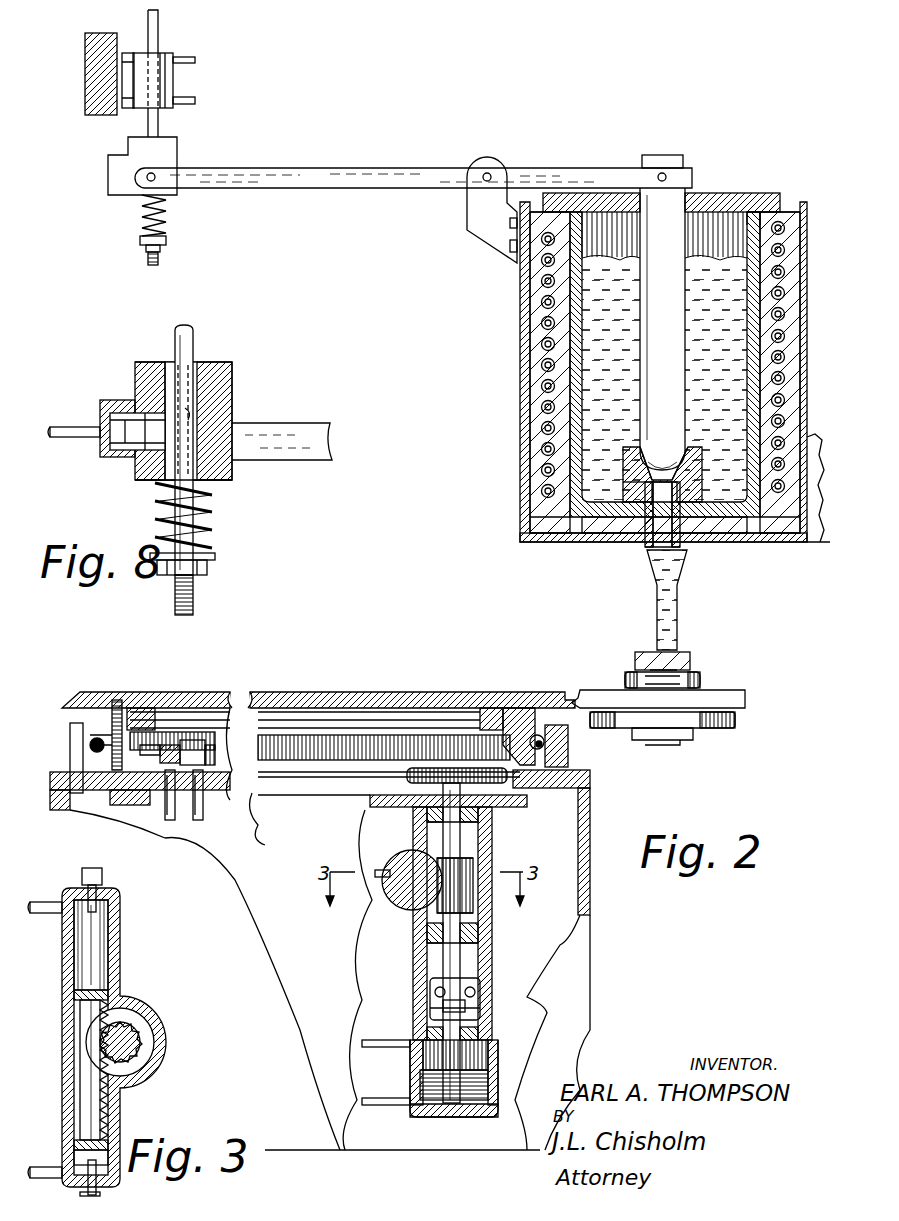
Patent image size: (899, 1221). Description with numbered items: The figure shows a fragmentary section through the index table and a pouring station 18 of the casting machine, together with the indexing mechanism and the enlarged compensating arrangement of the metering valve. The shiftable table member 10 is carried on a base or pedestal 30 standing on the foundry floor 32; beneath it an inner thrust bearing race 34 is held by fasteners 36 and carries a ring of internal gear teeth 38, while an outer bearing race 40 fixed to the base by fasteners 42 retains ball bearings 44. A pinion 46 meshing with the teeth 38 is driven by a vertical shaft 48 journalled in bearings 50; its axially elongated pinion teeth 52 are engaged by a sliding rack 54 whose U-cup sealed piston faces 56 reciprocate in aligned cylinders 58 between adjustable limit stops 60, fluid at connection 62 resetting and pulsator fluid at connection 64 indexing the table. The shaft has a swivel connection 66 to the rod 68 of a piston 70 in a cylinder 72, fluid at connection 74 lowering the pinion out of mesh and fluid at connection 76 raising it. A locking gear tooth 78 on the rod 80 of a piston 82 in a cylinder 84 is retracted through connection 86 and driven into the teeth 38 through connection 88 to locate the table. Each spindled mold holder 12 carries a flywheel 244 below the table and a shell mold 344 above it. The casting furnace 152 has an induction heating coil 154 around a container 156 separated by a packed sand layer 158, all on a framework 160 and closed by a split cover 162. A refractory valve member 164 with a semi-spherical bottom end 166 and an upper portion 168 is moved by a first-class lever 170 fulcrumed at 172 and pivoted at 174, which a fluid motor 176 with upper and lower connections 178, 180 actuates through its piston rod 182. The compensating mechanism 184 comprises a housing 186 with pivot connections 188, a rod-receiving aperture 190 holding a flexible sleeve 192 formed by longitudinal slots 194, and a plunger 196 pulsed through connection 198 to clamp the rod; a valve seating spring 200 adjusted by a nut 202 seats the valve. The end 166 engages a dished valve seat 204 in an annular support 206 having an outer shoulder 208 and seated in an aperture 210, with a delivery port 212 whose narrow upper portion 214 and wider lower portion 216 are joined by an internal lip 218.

In FIG. 2, the shiftable table member 10 is at (748, 699).
In FIG. 2, the spindled mold holder 12 is at (702, 677).
In FIG. 2, the station 18 is at (780, 613).
In FIG. 2, the base or pedestal 30 is at (590, 948).
In FIG. 2, the foundry floor 32 is at (298, 1150).
In FIG. 2, the inner thrust bearing race 34 is at (540, 772).
In FIG. 2, the fasteners 36 is at (118, 725).
In FIG. 2, the ring of internal gear teeth 38 is at (452, 745).
In FIG. 2, the outer bearing race 40 is at (560, 742).
In FIG. 2, the fasteners 42 is at (75, 748).
In FIG. 2, the ball bearings 44 is at (536, 734).
In FIG. 2, the pinion 46 is at (500, 780).
In FIG. 2, the vertical shaft 48 is at (455, 840).
In FIG. 3, the vertical shaft 48 is at (127, 1040).
In FIG. 2, the bearings 50 is at (478, 815).
In FIG. 2, the pinion teeth 52 is at (415, 893).
In FIG. 3, the pinion teeth 52 is at (140, 1050).
In FIG. 2, the sliding rack 54 is at (437, 878).
In FIG. 3, the sliding rack 54 is at (90, 1056).
In FIG. 3, the U-cup sealed piston faces 56 is at (96, 992).
In FIG. 3, the cylinders 58 is at (98, 935).
In FIG. 3, the adjustable limit stops 60 is at (97, 905).
In FIG. 3, the connection 62 is at (60, 902).
In FIG. 3, the connection 64 is at (60, 1170).
In FIG. 2, the swivel connection 66 is at (478, 1000).
In FIG. 2, the rod 68 is at (455, 1050).
In FIG. 2, the piston 70 is at (440, 1085).
In FIG. 2, the cylinder 72 is at (430, 1055).
In FIG. 2, the connection 74 is at (408, 1043).
In FIG. 2, the connection 76 is at (405, 1106).
In FIG. 2, the gear tooth 78 is at (140, 762).
In FIG. 2, the rod 80 is at (172, 745).
In FIG. 2, the piston 82 is at (165, 750).
In FIG. 2, the cylinder 84 is at (200, 758).
In FIG. 2, the connection 86 is at (172, 800).
In FIG. 2, the connection 88 is at (200, 790).
In FIG. 2, the casting furnace 152 is at (758, 549).
In FIG. 2, the induction heating coil 154 is at (545, 426).
In FIG. 2, the container 156 is at (745, 225).
In FIG. 2, the centering and insulating layer 158 is at (566, 338).
In FIG. 2, the framework 160 is at (560, 537).
In FIG. 2, the split disc-shaped cover 162 is at (720, 193).
In FIG. 2, the shiftable valve member 164 is at (662, 232).
In FIG. 2, the semi-spherical bottom end portion 166 is at (662, 450).
In FIG. 2, the upper portion 168 is at (668, 158).
In FIG. 2, the actuating lever means 170 is at (378, 168).
In FIG. 8, the actuating lever means 170 is at (290, 428).
In FIG. 2, the fulcrum 172 is at (489, 173).
In FIG. 2, the pivotal connection 174 is at (660, 174).
In FIG. 2, the fluid motor 176 is at (172, 82).
In FIG. 2, the upper connection 178 is at (190, 58).
In FIG. 2, the lower connection 180 is at (190, 102).
In FIG. 2, the piston rod 182 is at (158, 125).
In FIG. 8, the piston rod 182 is at (185, 340).
In FIG. 2, the compensating mechanism 184 is at (106, 165).
In FIG. 8, the compensating mechanism 184 is at (236, 376).
In FIG. 8, the housing 186 is at (230, 470).
In FIG. 2, the pivot connections 188 is at (147, 181).
In FIG. 8, the piston rod receiving aperture 190 is at (205, 380).
In FIG. 8, the flexible sleeve 192 is at (192, 412).
In FIG. 8, the longitudinal slots 194 is at (142, 398).
In FIG. 8, the plunger 196 is at (145, 455).
In FIG. 8, the connection 198 is at (97, 428).
In FIG. 2, the valve seating spring 200 is at (168, 215).
In FIG. 8, the valve seating spring 200 is at (214, 520).
In FIG. 8, the nut 202 is at (208, 568).
In FIG. 2, the valve seat 204 is at (642, 458).
In FIG. 2, the annular support 206 is at (640, 470).
In FIG. 2, the outer shoulder 208 is at (640, 500).
In FIG. 2, the aperture 210 is at (678, 530).
In FIG. 2, the delivery port 212 is at (680, 508).
In FIG. 2, the narrow upper portion 214 is at (690, 458).
In FIG. 2, the wider lower portion 216 is at (650, 532).
In FIG. 2, the internal lip 218 is at (686, 487).
In FIG. 2, the flywheel 244 is at (735, 720).
In FIG. 2, the shell mold 344 is at (660, 617).